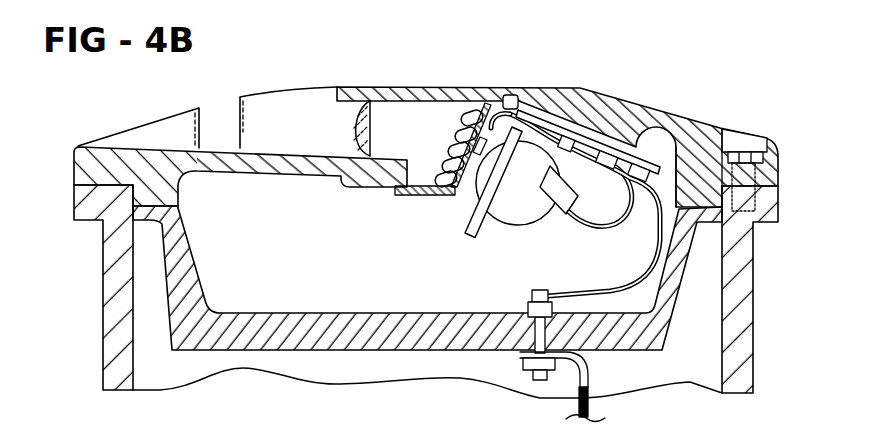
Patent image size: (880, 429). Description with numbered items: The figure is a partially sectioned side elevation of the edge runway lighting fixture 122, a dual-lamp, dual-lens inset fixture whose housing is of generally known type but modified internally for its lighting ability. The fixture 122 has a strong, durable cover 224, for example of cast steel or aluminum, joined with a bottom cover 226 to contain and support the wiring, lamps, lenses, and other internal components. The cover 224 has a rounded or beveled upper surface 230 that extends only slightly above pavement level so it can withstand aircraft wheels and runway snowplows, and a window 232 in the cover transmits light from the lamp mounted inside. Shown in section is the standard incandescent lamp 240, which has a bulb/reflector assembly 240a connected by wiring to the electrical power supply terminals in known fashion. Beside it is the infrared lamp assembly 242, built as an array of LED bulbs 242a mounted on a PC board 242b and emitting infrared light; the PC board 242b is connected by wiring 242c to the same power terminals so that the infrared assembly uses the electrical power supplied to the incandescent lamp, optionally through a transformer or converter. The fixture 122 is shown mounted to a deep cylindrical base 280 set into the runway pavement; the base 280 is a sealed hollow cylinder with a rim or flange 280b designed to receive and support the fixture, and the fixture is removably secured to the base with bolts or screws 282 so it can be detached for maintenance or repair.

The edge runway lighting fixture 122 is at (661, 64).
The cover 224 is at (703, 132).
The bottom cover 226 is at (673, 283).
The upper surface 230 is at (577, 89).
The window 232 is at (348, 135).
The incandescent lamp 240 is at (494, 236).
The bulb/reflector assembly 240a is at (542, 202).
The infrared lamp assembly 242 is at (454, 205).
The LED bulbs 242a is at (448, 150).
The PC board 242b is at (493, 110).
The wiring 242c is at (510, 110).
The base 280 is at (108, 250).
The rim or flange 280b is at (773, 197).
The bolts or screws 282 is at (747, 153).